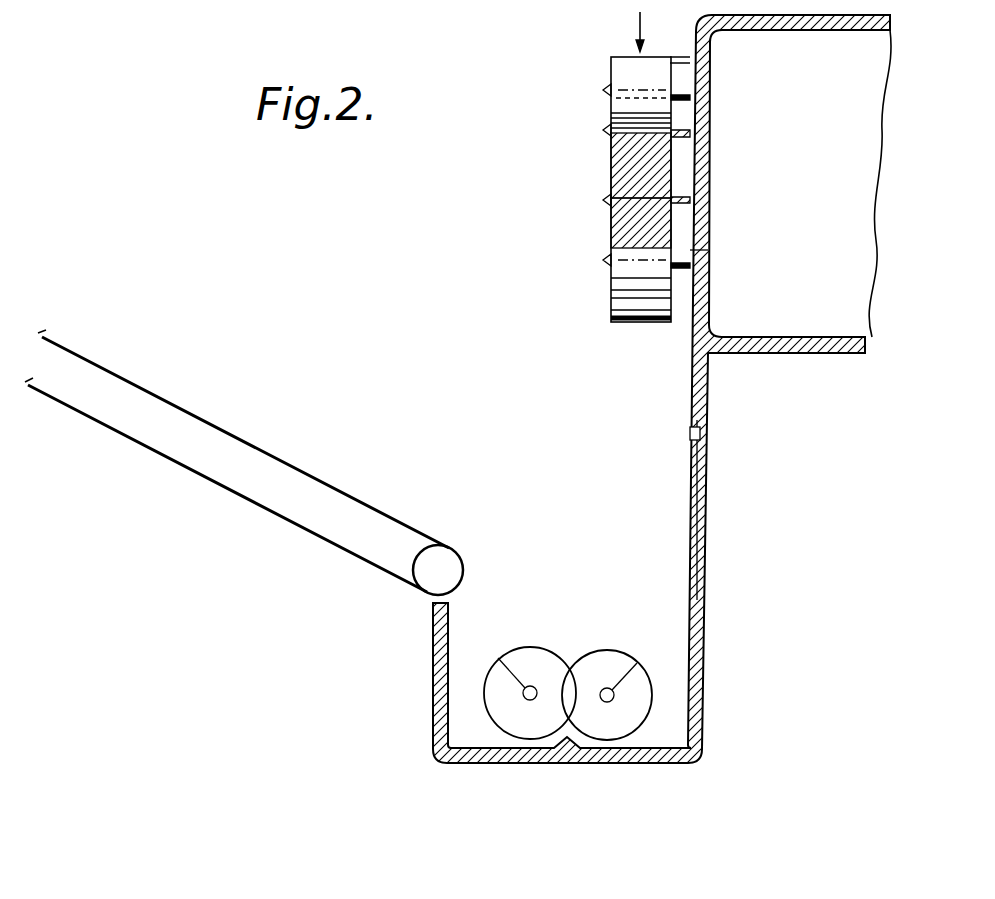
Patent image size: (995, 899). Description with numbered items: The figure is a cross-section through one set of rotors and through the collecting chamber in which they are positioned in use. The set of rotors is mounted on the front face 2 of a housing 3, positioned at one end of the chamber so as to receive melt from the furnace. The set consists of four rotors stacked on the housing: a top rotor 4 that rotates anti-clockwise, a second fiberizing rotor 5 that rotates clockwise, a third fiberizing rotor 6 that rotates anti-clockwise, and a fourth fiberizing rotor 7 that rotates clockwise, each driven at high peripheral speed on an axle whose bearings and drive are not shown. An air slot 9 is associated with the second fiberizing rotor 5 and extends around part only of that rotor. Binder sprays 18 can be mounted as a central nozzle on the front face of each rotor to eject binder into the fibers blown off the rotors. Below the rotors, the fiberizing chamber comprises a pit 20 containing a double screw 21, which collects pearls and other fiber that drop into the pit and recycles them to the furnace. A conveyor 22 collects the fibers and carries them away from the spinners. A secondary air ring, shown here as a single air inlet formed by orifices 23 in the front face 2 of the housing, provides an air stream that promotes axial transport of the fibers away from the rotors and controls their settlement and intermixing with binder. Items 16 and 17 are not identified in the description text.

The front face 2 is at (702, 44).
The housing 3 is at (865, 12).
The top rotor 4 is at (632, 86).
The second fiberizing rotor 5 is at (632, 152).
The third fiberizing rotor 6 is at (632, 218).
The fourth fiberizing rotor 7 is at (628, 288).
The air slot 9 is at (700, 250).
The top plate 16 is at (690, 51).
The stack 17 is at (611, 56).
The binder sprays 18 is at (611, 194).
The pit 20 is at (700, 523).
The double screw 21 is at (630, 692).
The conveyor 22 is at (186, 474).
The orifices 23 is at (695, 433).